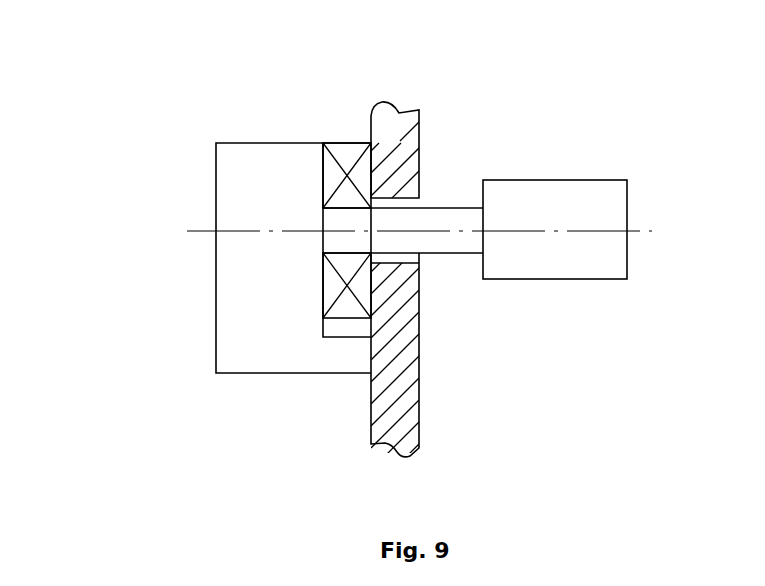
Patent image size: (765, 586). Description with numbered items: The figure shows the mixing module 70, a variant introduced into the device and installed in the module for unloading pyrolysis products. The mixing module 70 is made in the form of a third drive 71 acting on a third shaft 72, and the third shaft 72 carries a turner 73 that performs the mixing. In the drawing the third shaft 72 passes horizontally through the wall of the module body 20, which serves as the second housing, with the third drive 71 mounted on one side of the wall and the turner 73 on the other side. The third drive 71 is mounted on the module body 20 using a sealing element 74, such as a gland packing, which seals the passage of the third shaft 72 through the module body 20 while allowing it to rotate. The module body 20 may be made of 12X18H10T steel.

The mixing module 70 is at (222, 202).
The third drive 71 is at (277, 177).
The sealing element 74 is at (216, 229).
The third shaft 72 is at (463, 231).
The turner 73 is at (557, 248).
The module body 20 is at (403, 402).